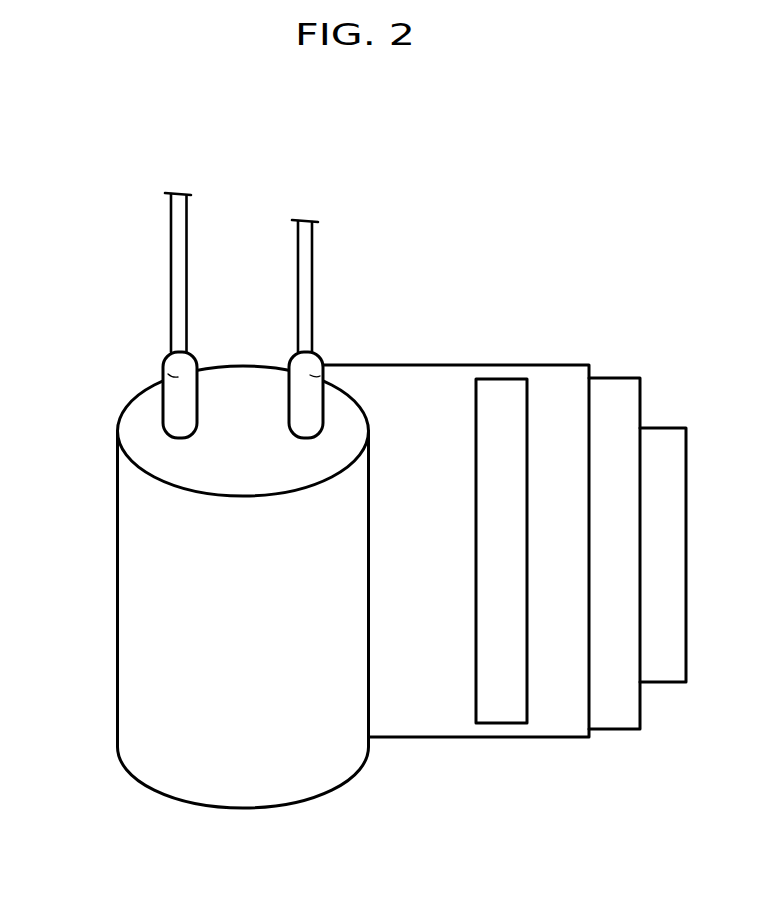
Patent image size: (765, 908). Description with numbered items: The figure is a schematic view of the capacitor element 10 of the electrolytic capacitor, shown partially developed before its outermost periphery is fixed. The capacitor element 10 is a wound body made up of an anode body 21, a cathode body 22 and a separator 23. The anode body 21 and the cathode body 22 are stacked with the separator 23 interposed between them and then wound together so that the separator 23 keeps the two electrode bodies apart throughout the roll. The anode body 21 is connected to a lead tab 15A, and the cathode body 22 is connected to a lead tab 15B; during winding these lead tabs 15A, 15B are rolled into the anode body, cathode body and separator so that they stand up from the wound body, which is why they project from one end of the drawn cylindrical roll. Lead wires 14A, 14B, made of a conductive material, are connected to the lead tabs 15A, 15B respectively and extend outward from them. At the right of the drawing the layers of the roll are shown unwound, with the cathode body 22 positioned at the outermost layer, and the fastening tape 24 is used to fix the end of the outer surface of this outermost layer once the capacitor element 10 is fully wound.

The capacitor element 10 is at (470, 202).
The lead wire 14A is at (172, 243).
The lead wire 14B is at (313, 233).
The lead tab 15A is at (170, 376).
The lead tab 15B is at (325, 376).
The anode body 21 is at (514, 700).
The cathode body 22 is at (619, 717).
The separator 23 is at (436, 700).
The fastening tape 24 is at (663, 665).